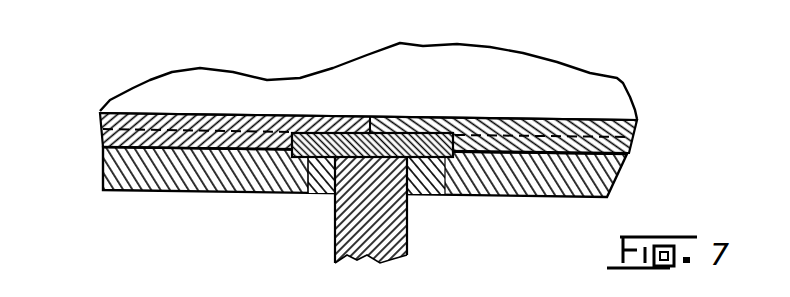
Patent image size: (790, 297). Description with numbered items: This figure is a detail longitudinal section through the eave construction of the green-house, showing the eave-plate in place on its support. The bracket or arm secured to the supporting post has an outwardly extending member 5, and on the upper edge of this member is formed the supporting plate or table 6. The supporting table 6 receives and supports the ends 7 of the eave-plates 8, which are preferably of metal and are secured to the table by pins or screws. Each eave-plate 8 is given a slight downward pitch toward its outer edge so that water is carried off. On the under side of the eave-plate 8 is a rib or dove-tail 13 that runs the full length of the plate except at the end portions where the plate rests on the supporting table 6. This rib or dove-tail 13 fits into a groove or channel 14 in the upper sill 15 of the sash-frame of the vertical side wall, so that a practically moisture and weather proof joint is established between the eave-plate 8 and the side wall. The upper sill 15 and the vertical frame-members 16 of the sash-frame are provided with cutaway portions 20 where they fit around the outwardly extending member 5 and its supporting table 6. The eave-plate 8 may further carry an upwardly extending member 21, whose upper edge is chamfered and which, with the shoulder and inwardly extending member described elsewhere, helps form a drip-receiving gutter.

The outwardly extending member 5 is at (368, 188).
The supporting plate or table 6 is at (427, 147).
The ends of eave-plates 7 is at (387, 118).
The eave-plate 8 is at (145, 112).
The rib or dove-tail 13 is at (100, 135).
The groove or channel 14 is at (103, 150).
The upper sill 15 is at (180, 180).
The vertical frame-members 16 is at (353, 248).
The cutaway portions 20 is at (362, 196).
The upwardly extending member 21 is at (533, 68).